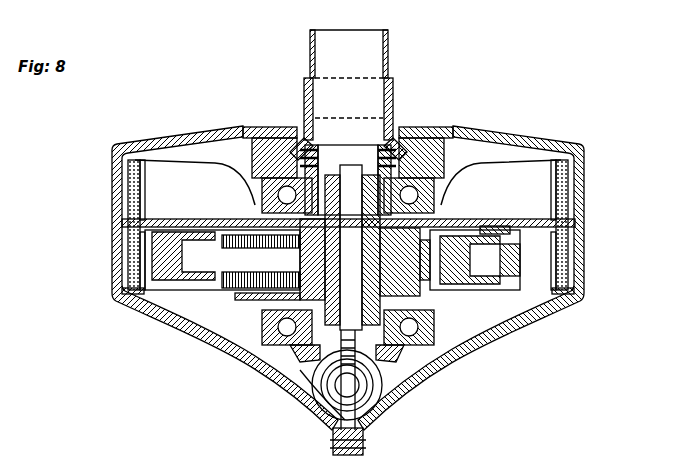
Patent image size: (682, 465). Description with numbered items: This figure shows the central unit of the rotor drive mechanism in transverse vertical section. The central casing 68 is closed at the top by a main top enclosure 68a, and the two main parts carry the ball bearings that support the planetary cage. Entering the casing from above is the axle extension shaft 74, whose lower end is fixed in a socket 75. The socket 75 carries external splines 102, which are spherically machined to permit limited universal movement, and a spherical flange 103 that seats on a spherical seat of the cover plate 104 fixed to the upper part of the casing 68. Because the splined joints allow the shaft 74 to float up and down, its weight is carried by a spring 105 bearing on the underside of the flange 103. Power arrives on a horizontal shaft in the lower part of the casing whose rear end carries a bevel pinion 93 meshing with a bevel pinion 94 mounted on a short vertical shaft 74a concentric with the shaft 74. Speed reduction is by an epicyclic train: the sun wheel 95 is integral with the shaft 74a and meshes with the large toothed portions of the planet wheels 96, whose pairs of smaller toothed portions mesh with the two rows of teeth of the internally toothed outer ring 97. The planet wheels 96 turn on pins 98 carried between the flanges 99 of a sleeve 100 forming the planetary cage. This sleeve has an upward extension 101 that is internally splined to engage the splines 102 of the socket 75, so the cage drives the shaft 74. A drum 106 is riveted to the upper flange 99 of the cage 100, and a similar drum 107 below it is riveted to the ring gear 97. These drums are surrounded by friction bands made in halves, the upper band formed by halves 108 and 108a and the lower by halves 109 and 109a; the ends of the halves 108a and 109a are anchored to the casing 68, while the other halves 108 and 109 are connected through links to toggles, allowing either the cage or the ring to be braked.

The central casing 68 is at (112, 235).
The main top enclosure 68a is at (532, 122).
The axle extension shaft 74 is at (389, 58).
The short vertical shaft 74a is at (325, 372).
The socket 75 is at (394, 102).
The bevel pinion 93 is at (335, 400).
The bevel pinion 94 is at (318, 360).
The sun wheel 95 is at (312, 260).
The planet wheels 96 is at (502, 278).
The internally toothed outer ring 97 is at (182, 248).
The pins 98 is at (420, 300).
The flanges 99 is at (228, 222).
The sleeve 100 is at (300, 248).
The upward extension 101 is at (318, 160).
The external splines 102 is at (318, 178).
The spherical flange 103 is at (268, 133).
The cover plate 104 is at (282, 150).
The spring 105 is at (300, 165).
The drum 106 is at (134, 198).
The drum 107 is at (134, 262).
The friction band 108 is at (140, 180).
The friction band half 108a is at (556, 172).
The friction band 109 is at (122, 290).
The friction band half 109a is at (568, 290).